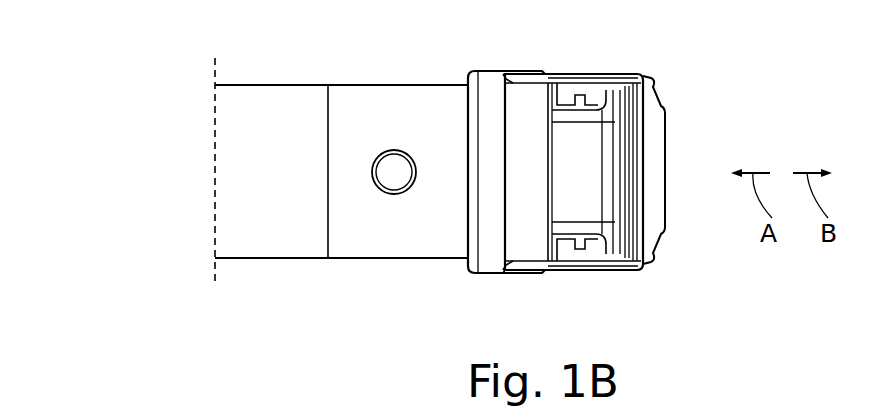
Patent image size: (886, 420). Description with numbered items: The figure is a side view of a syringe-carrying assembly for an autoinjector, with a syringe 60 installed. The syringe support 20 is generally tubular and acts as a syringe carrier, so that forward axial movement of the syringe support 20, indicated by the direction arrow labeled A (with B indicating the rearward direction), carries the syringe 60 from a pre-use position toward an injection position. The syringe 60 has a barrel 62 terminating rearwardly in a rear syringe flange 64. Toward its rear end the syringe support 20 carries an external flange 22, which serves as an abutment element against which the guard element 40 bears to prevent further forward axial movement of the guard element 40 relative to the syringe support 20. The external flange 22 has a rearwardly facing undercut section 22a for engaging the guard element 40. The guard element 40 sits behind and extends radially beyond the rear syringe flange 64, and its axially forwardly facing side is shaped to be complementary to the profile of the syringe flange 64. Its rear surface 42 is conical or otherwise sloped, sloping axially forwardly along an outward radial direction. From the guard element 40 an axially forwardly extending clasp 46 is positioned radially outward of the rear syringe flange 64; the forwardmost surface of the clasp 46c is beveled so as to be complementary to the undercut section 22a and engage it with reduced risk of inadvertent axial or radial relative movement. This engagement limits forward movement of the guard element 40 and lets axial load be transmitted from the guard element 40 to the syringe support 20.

The syringe support 20 is at (369, 82).
The external flange 22 is at (490, 84).
The rearwardly facing undercut section 22a is at (513, 80).
The guard element 40 is at (600, 78).
The rear surface 42 is at (650, 190).
The clasp 46 is at (543, 272).
The forwardmost surface of the clasp 46c is at (503, 273).
The syringe 60 is at (586, 143).
The barrel 62 is at (567, 226).
The rear syringe flange 64 is at (625, 246).